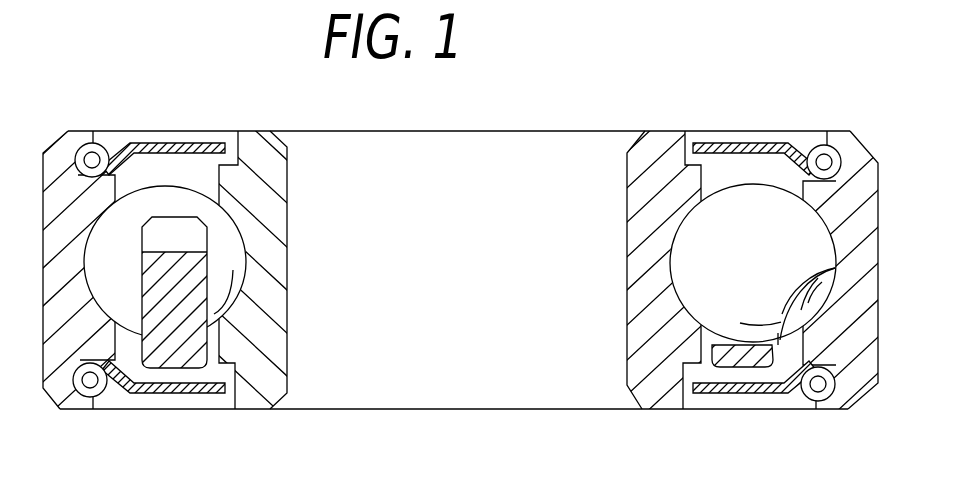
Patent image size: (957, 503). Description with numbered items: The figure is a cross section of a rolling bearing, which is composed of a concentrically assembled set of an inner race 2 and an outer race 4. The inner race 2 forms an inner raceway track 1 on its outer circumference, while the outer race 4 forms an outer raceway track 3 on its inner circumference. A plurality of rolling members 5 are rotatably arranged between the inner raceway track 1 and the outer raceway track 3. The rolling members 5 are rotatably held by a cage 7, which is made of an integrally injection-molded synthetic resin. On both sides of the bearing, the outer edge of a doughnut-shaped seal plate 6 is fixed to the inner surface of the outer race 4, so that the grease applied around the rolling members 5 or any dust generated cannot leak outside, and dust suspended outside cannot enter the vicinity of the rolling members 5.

The inner raceway track 1 is at (671, 292).
The inner race 2 is at (653, 376).
The outer raceway track 3 is at (776, 387).
The outer race 4 is at (866, 172).
The rolling member 5 is at (222, 243).
The seal plate 6 is at (184, 143).
The cage 7 is at (168, 352).